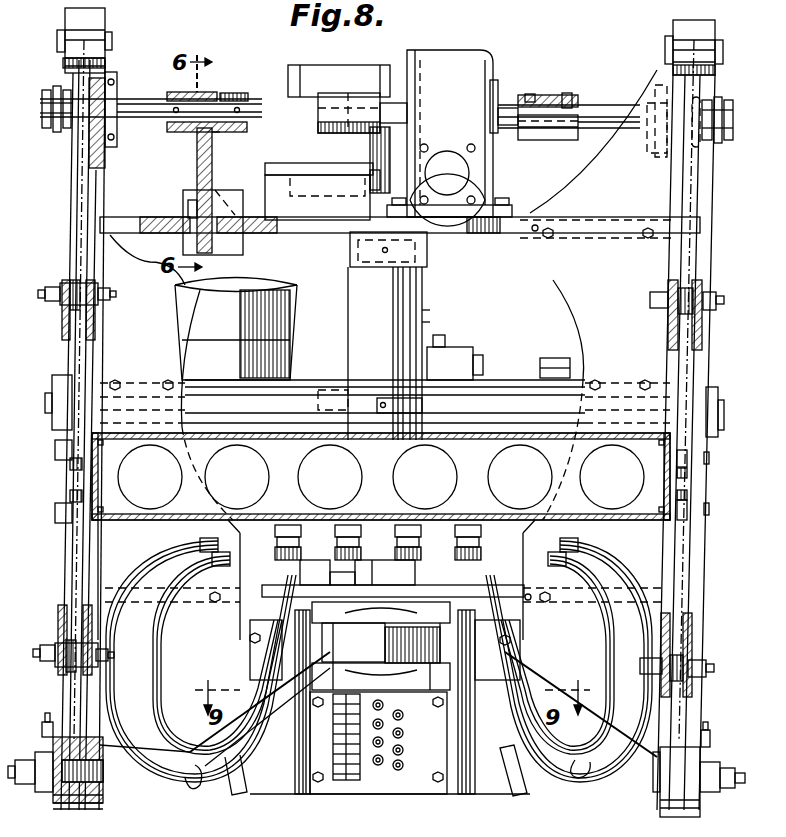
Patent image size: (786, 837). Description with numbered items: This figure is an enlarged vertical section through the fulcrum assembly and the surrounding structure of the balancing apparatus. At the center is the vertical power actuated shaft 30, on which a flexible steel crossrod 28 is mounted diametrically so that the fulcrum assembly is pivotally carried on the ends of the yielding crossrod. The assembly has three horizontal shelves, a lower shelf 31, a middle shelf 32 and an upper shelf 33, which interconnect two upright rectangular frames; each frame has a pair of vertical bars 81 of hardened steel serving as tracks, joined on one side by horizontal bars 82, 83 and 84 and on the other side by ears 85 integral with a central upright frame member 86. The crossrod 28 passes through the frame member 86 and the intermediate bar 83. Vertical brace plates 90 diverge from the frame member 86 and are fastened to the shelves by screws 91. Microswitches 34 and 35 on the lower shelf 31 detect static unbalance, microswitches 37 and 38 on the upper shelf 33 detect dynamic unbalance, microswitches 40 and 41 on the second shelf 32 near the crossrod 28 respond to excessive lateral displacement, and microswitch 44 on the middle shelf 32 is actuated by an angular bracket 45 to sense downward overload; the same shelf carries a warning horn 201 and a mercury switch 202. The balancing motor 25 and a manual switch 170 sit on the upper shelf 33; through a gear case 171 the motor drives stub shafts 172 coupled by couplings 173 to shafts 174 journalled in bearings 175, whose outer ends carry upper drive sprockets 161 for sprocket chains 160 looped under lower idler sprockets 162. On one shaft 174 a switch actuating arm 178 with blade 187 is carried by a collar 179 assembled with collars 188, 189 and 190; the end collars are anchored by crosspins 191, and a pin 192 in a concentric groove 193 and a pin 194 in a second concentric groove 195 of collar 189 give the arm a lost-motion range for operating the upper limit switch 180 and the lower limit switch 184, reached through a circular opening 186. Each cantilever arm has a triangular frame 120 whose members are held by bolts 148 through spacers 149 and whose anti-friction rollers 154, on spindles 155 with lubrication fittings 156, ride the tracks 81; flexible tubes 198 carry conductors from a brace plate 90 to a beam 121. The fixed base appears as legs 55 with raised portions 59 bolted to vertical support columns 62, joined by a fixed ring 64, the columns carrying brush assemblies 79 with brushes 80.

The balancing motor 25 is at (365, 72).
The flexible steel crossrod 28 is at (490, 427).
The vertical power actuated shaft 30 is at (352, 278).
The lower shelf 31 is at (500, 593).
The middle shelf 32 is at (500, 390).
The upper shelf 33 is at (292, 247).
The microswitch 34 is at (378, 542).
The microswitch 35 is at (425, 572).
The microswitch 37 is at (350, 247).
The microswitch 38 is at (427, 250).
The microswitch 40 is at (322, 392).
The microswitch 41 is at (400, 426).
The microswitch 44 is at (468, 350).
The angular bracket 45 is at (440, 335).
The leg 55 is at (230, 772).
The raised portion 59 is at (290, 794).
The vertical support column 62 is at (442, 802).
The fixed ring 64 is at (372, 653).
The brush assembly 79 is at (380, 770).
The brush 80 is at (398, 772).
The vertical bar 81 is at (75, 220).
The horizontal bar 82 is at (66, 14).
The intermediate horizontal bar 83 is at (55, 390).
The horizontal bar 84 is at (53, 800).
The ear 85 is at (104, 18).
The central upright frame member 86 is at (98, 188).
The vertical brace plate 90 is at (135, 178).
The screw 91 is at (165, 392).
The triangular frame 120 is at (70, 545).
The beam 121 is at (155, 524).
The bolt 148 is at (55, 446).
The spacer 149 is at (78, 492).
The anti-friction roller 154 is at (70, 300).
The spindle 155 is at (118, 297).
The lubrication fitting 156 is at (48, 287).
The sprocket chain 160 is at (80, 238).
The upper drive sprocket 161 is at (80, 130).
The lower idler sprocket 162 is at (73, 805).
The manual switch 170 is at (345, 167).
The gear case 171 is at (444, 56).
The stub shaft 172 is at (405, 108).
The coupling 173 is at (341, 93).
The shaft 174 is at (268, 96).
The bearing 175 is at (120, 93).
The switch actuating arm 178 is at (197, 175).
The collar 179 is at (215, 73).
The limit switch 180 is at (240, 193).
The limit switch 184 is at (238, 236).
The circular opening 186 is at (192, 236).
The blade 187 is at (200, 207).
The end collar 188 is at (193, 101).
The collar 189 is at (214, 134).
The end collar 190 is at (259, 152).
The crosspin 191 is at (234, 110).
The pin 192 is at (246, 92).
The concentric groove 193 is at (210, 66).
The pin 194 is at (200, 140).
The second concentric groove 195 is at (231, 166).
The flexible tube 198 is at (192, 748).
The warning horn 201 is at (292, 325).
The mercury switch 202 is at (552, 360).